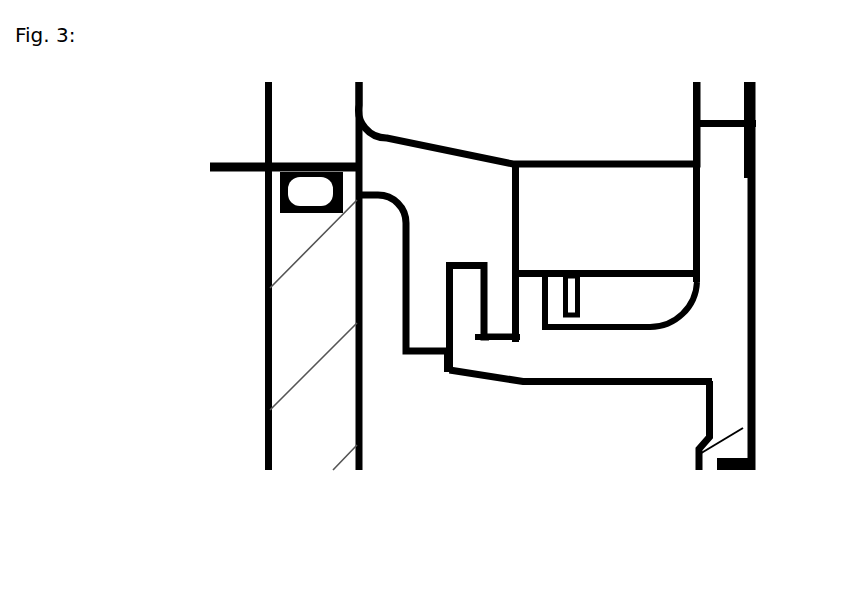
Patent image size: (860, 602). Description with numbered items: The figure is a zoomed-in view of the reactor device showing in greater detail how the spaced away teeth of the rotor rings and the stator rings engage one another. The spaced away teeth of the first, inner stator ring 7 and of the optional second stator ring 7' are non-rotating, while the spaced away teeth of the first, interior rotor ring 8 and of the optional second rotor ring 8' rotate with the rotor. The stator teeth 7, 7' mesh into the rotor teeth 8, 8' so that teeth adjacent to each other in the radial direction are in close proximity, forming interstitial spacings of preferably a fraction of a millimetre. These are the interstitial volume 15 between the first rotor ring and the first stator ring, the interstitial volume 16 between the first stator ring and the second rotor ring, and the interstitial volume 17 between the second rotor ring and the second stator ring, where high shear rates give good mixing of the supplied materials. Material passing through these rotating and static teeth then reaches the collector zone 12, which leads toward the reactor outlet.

The spaced away teeth of first stator ring 7 is at (345, 270).
The spaced away teeth of second stator ring 7' is at (340, 253).
The spaced away teeth of first rotor ring 8 is at (420, 285).
The spaced away teeth of second rotor ring 8' is at (448, 380).
The collector zone 12 is at (413, 403).
The interstitial volume between first rotor ring and first stator ring 15 is at (518, 343).
The interstitial volume between first stator ring and second rotor ring 16 is at (478, 343).
The interstitial volume between second rotor ring and second stator ring 17 is at (443, 360).